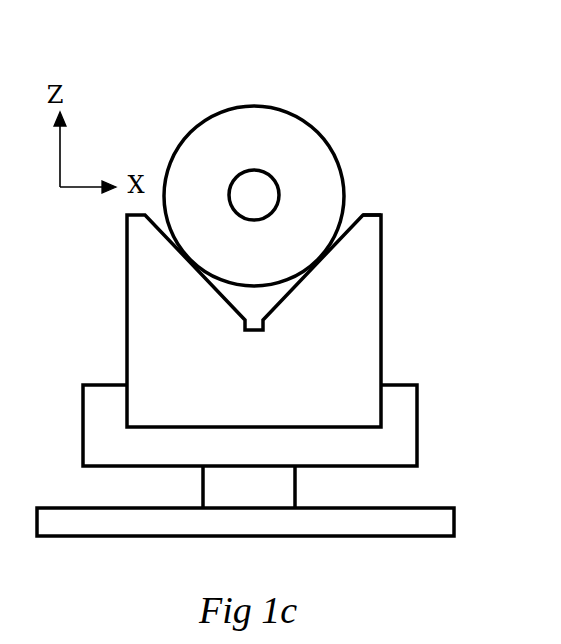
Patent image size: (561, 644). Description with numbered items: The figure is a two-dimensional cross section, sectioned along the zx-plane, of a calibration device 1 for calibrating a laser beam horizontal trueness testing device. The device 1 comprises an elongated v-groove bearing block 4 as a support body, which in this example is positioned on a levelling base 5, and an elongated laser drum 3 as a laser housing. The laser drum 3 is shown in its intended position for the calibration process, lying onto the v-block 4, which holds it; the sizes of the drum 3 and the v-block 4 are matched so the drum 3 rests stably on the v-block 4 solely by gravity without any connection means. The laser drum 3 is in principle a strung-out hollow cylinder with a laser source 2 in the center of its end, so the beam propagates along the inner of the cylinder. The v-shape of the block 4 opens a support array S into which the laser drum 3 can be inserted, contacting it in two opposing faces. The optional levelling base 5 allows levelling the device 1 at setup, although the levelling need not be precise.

The calibration device 1 is at (272, 50).
The laser source 2 is at (268, 193).
The laser drum 3 is at (315, 150).
The v-groove bearing block 4 is at (158, 300).
The levelling base 5 is at (202, 457).
The support array S is at (364, 210).